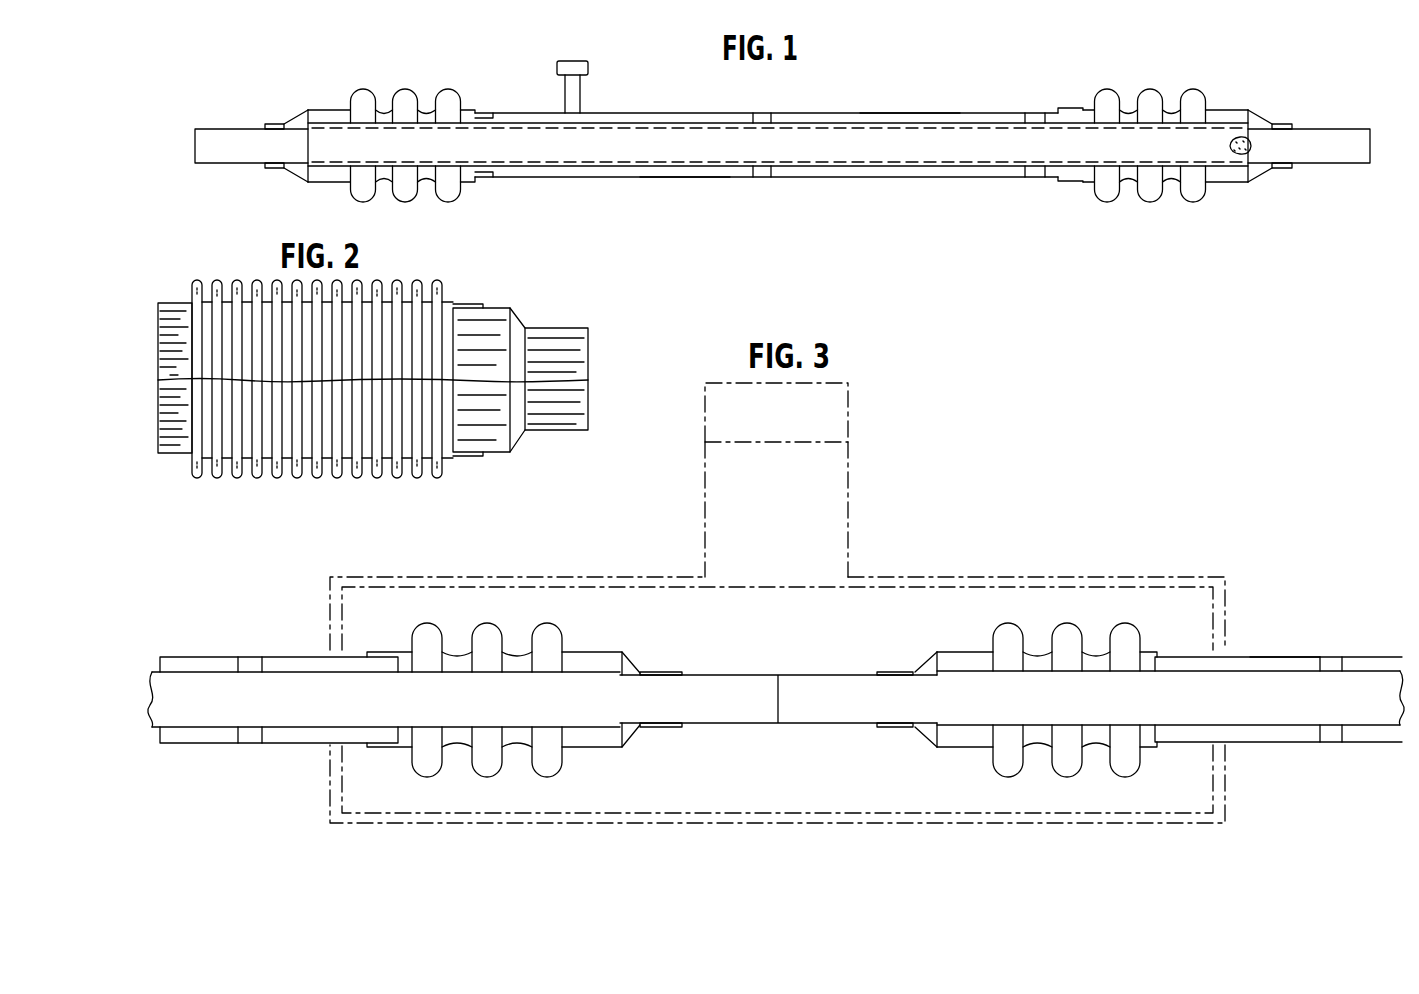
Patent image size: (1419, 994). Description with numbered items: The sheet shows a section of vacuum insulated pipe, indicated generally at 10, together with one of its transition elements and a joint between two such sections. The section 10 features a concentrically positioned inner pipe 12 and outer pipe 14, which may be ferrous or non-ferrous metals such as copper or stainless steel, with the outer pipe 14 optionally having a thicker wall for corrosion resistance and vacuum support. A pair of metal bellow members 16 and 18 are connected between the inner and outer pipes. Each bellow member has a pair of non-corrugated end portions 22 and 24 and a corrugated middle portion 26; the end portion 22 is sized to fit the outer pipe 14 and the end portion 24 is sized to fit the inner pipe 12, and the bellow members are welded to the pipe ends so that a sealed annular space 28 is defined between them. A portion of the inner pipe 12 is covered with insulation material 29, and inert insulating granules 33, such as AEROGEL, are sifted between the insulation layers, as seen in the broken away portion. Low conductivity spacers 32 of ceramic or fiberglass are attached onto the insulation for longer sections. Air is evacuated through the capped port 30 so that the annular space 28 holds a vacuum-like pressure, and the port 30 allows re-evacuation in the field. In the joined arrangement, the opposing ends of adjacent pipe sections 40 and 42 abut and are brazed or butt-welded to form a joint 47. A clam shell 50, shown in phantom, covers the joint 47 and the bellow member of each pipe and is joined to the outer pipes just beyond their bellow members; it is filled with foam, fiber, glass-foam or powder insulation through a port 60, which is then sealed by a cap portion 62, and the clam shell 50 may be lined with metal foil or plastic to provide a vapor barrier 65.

In FIG. 1, the section of insulated pipe 10 is at (851, 195).
In FIG. 1, the inner pipe 12 is at (252, 165).
In FIG. 1, the outer pipe 14 is at (710, 112).
In FIG. 1, the bellow member 16 is at (413, 90).
In FIG. 1, the bellow member 18 is at (1162, 80).
In FIG. 2, the bellow member 18 is at (290, 489).
In FIG. 1, the non-corrugated end portion 22 is at (1072, 107).
In FIG. 2, the non-corrugated end portion 22 is at (173, 457).
In FIG. 1, the non-corrugated end portion 24 is at (1276, 120).
In FIG. 2, the non-corrugated end portion 24 is at (571, 330).
In FIG. 1, the corrugated middle portion 26 is at (1192, 201).
In FIG. 2, the corrugated middle portion 26 is at (403, 282).
In FIG. 1, the sealed annular space 28 is at (908, 111).
In FIG. 3, the sealed annular space 28 is at (1300, 662).
In FIG. 1, the insulation material 29 is at (683, 179).
In FIG. 1, the capped port 30 is at (584, 87).
In FIG. 1, the low conductivity spacers 32 is at (765, 111).
In FIG. 1, the inert insulating granules 33 is at (1254, 141).
In FIG. 3, the pipe section 40 is at (211, 654).
In FIG. 3, the pipe section 42 is at (1278, 651).
In FIG. 3, the joint 47 is at (777, 695).
In FIG. 3, the clam shell 50 is at (943, 553).
In FIG. 3, the port 60 is at (848, 509).
In FIG. 3, the cap portion 62 is at (850, 417).
In FIG. 3, the vapor barrier 65 is at (1108, 575).